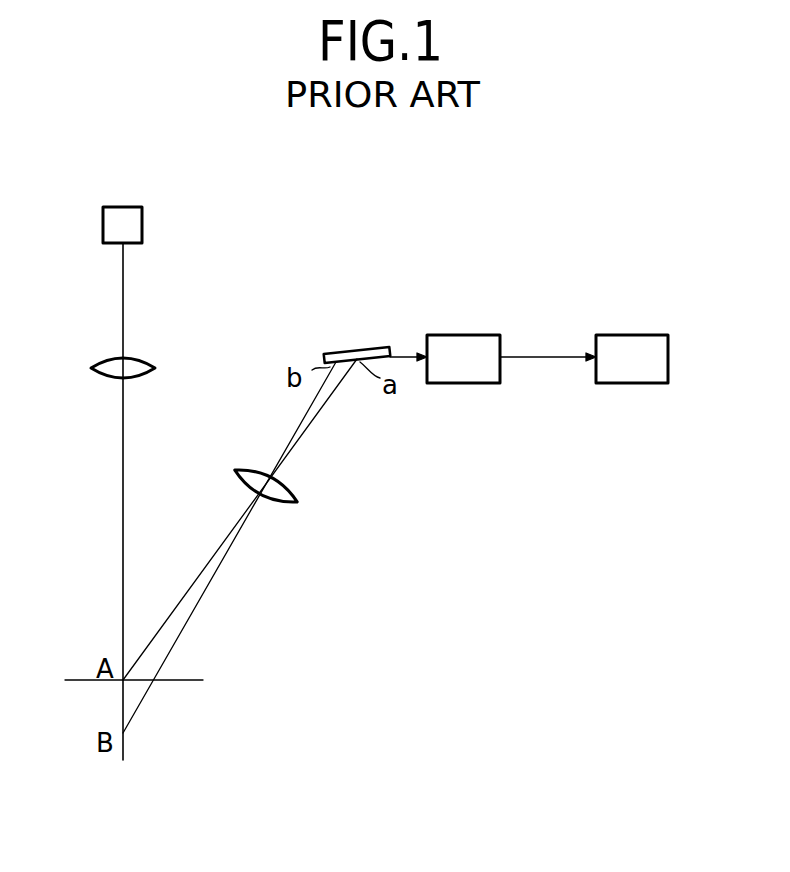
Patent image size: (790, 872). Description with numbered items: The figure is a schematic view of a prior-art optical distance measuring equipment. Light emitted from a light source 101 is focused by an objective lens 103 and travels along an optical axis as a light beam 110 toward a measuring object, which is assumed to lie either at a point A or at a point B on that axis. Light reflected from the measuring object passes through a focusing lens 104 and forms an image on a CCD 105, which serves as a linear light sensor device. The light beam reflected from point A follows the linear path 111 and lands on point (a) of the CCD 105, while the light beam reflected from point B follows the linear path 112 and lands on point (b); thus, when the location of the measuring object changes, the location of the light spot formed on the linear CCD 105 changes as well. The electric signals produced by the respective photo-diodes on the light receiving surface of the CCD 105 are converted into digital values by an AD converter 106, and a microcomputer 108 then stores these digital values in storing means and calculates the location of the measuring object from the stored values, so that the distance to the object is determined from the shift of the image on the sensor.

The light source 101 is at (142, 224).
The objective lens 103 is at (148, 362).
The focusing lens 104 is at (278, 503).
The CCD 105 is at (350, 348).
The AD converter 106 is at (465, 335).
The microcomputer 108 is at (627, 335).
The light beam 110 is at (123, 502).
The linear path of reflected light beam 111 is at (192, 583).
The linear path of reflected light beam 112 is at (193, 613).